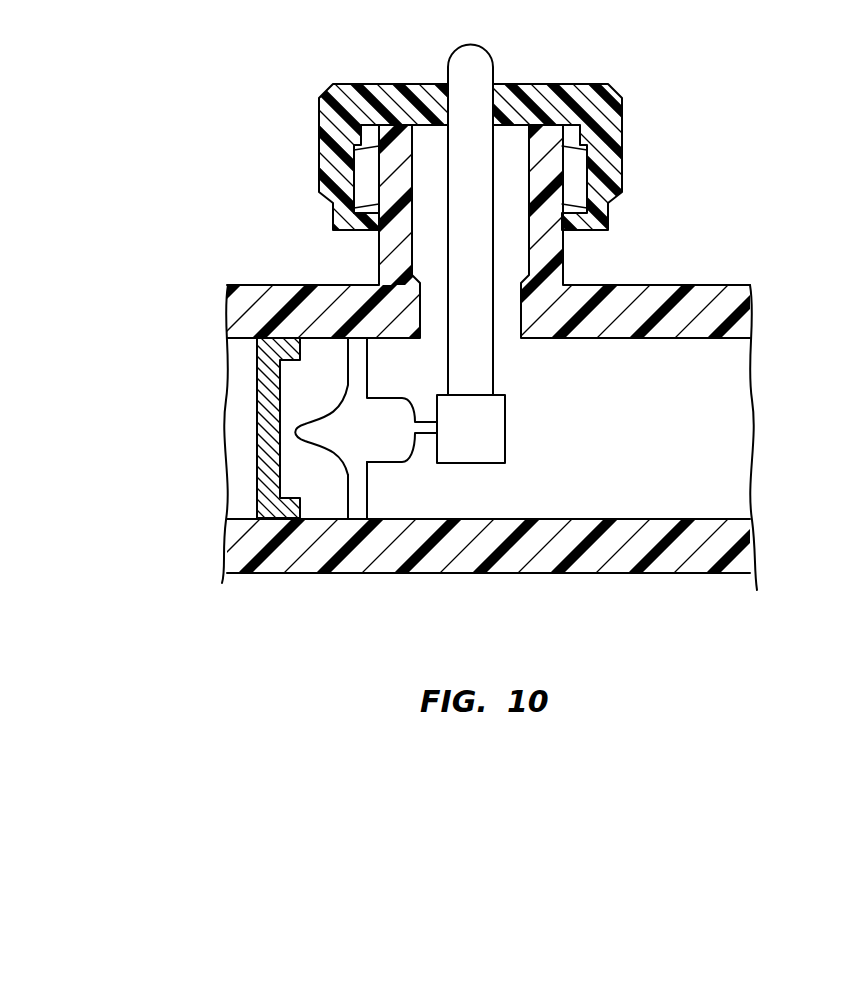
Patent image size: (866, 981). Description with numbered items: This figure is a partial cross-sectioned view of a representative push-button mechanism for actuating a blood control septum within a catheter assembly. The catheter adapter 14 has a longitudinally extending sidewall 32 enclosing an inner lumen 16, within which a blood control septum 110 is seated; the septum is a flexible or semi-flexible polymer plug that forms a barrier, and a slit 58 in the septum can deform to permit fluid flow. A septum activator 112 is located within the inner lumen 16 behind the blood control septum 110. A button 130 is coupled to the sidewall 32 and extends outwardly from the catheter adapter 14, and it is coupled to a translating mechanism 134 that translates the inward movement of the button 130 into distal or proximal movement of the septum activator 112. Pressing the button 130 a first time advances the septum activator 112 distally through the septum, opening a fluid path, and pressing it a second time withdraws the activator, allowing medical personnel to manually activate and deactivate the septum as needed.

The catheter adapter 14 is at (723, 562).
The inner lumen 16 is at (710, 468).
The sidewall 32 is at (702, 290).
The slit 58 is at (290, 428).
The blood control septum 110 is at (262, 483).
The septum activator 112 is at (367, 493).
The button 130 is at (478, 59).
The translating mechanism 134 is at (503, 424).